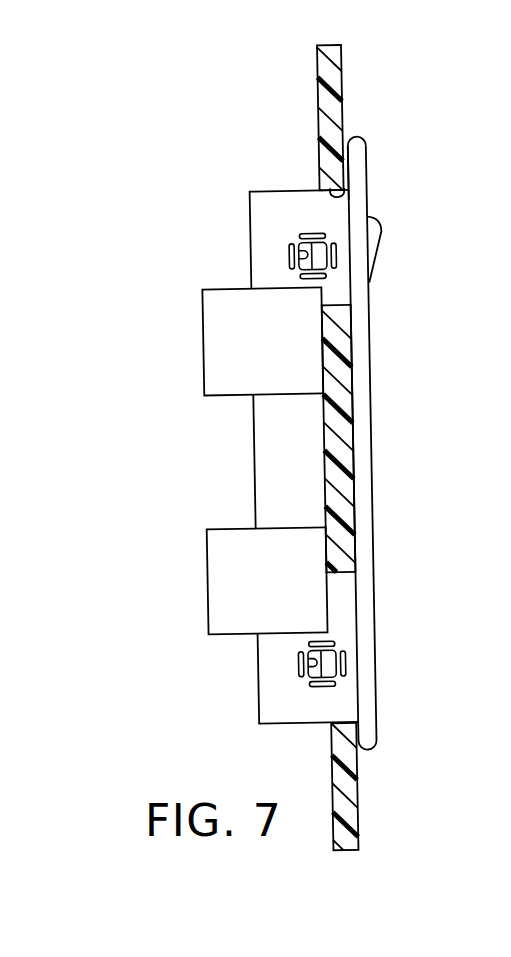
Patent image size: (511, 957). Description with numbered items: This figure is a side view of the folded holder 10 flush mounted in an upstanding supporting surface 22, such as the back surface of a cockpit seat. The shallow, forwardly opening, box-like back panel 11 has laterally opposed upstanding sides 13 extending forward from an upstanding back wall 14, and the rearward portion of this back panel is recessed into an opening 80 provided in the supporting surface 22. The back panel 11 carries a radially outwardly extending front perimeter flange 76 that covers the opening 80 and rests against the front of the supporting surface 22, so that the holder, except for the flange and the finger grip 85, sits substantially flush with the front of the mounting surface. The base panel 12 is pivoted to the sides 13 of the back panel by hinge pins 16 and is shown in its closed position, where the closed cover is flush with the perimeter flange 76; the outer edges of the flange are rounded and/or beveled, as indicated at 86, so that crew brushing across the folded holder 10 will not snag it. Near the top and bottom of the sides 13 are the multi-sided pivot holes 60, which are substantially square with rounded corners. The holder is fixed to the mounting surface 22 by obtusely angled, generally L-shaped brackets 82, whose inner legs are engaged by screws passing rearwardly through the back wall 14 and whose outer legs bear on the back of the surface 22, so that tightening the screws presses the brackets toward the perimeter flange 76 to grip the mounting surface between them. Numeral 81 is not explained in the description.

The holder 10 is at (405, 420).
The back panel 11 is at (370, 370).
The base panel 12 is at (381, 245).
The sides 13 is at (341, 587).
The back wall 14 is at (255, 515).
The hinge pins 16 is at (336, 664).
The supporting surface 22 is at (325, 100).
The pivot holes 60 is at (300, 262).
The front perimeter flange 76 is at (355, 157).
The opening 80 is at (330, 193).
The wall panel 81 is at (335, 113).
The L-shaped brackets 82 is at (215, 327).
The finger grip 85 is at (378, 243).
The rounded and/or beveled outer edges 86 is at (352, 138).